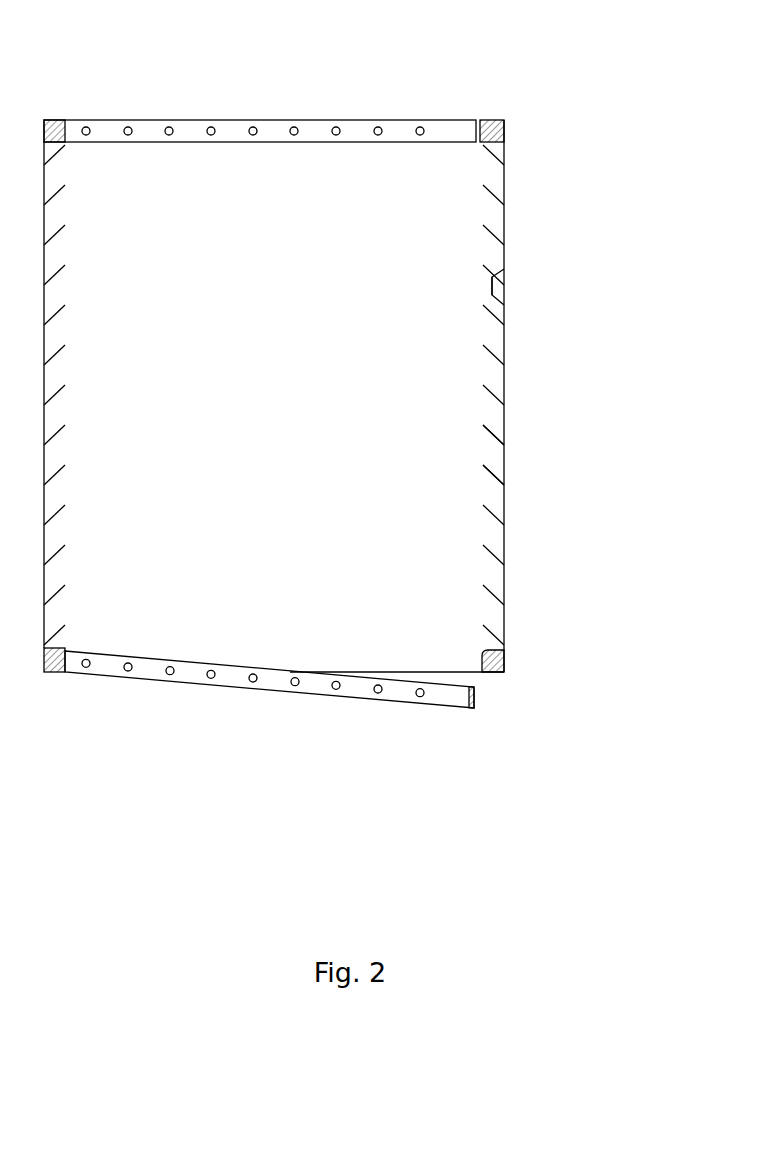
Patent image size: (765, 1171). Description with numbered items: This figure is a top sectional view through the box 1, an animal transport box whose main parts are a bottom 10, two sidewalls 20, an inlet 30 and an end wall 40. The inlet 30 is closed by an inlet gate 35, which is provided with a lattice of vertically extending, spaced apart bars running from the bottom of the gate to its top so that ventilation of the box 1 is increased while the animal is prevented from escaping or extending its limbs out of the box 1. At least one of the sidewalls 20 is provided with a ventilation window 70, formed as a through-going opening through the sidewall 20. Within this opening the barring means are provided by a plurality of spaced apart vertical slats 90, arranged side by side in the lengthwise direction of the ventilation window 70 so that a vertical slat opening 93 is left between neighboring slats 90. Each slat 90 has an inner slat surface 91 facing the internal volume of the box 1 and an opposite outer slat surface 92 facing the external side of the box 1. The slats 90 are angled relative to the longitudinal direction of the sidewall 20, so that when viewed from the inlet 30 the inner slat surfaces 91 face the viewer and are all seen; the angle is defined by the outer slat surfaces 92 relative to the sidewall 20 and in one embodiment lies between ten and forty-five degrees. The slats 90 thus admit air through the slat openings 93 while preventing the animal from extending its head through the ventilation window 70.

The box 1 is at (502, 704).
The bottom 10 is at (132, 407).
The sidewall 20 is at (504, 610).
The inlet 30 is at (352, 672).
The inlet gate 35 is at (218, 687).
The end wall 40 is at (318, 120).
The ventilation window 70 is at (504, 232).
The vertical slat 90 is at (504, 428).
The inner slat surface 91 is at (504, 305).
The outer slat surface 92 is at (504, 270).
The vertical slat opening 93 is at (493, 455).